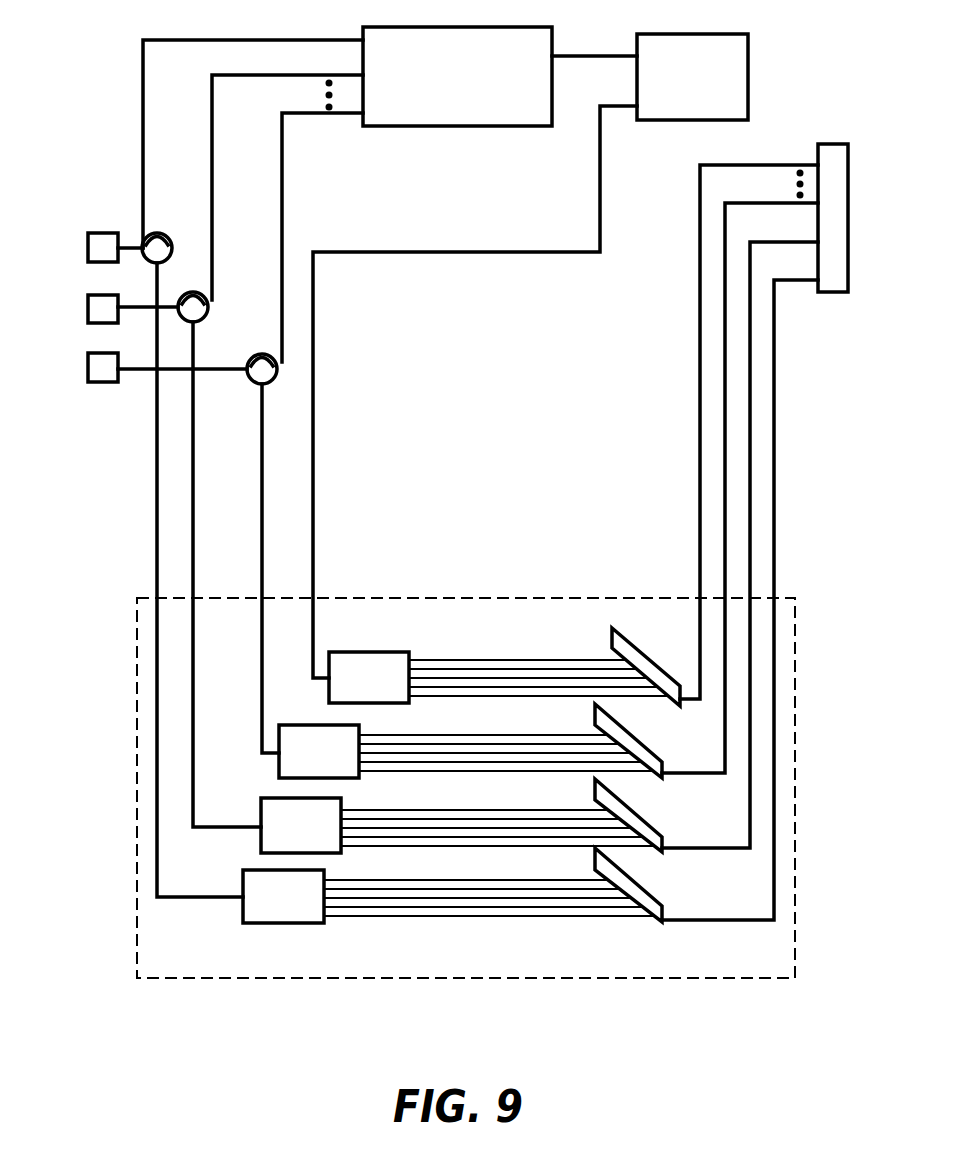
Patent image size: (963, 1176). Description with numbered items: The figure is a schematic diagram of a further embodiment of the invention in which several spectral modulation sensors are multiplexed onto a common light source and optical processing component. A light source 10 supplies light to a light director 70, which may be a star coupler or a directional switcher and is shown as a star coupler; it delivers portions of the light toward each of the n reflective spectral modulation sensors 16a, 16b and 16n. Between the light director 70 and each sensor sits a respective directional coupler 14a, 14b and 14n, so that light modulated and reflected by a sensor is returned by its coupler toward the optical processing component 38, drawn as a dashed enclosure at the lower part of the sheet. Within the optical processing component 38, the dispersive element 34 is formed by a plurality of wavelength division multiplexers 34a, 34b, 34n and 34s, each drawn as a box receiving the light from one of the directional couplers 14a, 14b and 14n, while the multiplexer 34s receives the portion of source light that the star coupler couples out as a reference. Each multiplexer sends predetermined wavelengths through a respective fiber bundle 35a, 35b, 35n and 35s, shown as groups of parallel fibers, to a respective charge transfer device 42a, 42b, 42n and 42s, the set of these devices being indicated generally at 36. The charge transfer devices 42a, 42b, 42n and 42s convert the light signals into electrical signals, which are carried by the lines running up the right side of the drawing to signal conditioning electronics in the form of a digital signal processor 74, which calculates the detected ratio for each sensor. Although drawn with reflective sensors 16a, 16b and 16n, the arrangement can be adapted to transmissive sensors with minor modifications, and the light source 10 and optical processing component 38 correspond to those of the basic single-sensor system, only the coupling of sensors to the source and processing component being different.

The light source 10 is at (722, 82).
The light director 70 is at (457, 99).
The digital signal processor 74 is at (833, 254).
The directional coupler 14a is at (173, 226).
The directional coupler 14b is at (196, 286).
The directional coupler 14n is at (252, 342).
The spectral modulation sensor 16a is at (85, 260).
The spectral modulation sensor 16b is at (103, 321).
The spectral modulation sensor 16n is at (138, 381).
The dispersive element 34 is at (374, 582).
The wavelength division multiplexer 34s is at (391, 663).
The wavelength division multiplexer 34n is at (282, 760).
The wavelength division multiplexer 34b is at (264, 833).
The wavelength division multiplexer 34a is at (246, 905).
The fiber bundle 35s is at (539, 693).
The fiber bundle 35n is at (506, 770).
The fiber bundle 35b is at (497, 843).
The fiber bundle 35a is at (489, 913).
The fiber couplers 36 is at (651, 582).
The charge transfer device 42s is at (663, 692).
The charge transfer device 42n is at (646, 768).
The charge transfer device 42b is at (650, 843).
The charge transfer device 42a is at (660, 906).
The optical processing component 38 is at (466, 825).